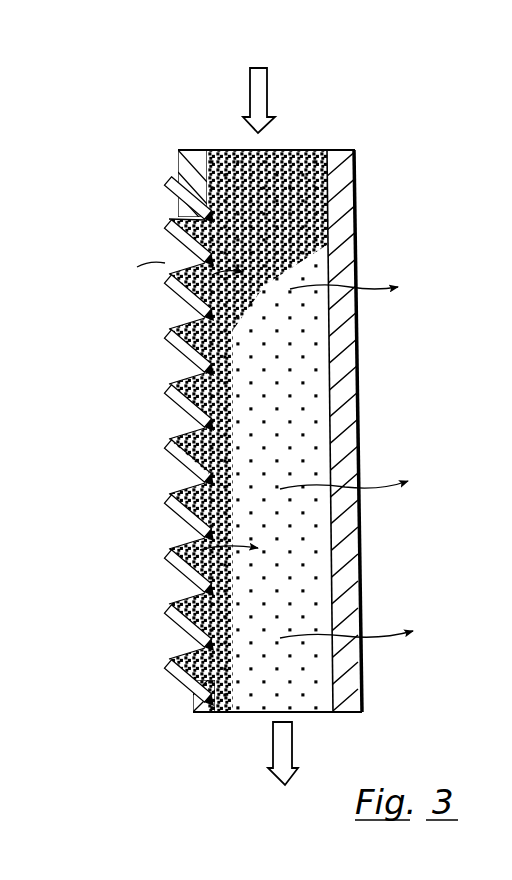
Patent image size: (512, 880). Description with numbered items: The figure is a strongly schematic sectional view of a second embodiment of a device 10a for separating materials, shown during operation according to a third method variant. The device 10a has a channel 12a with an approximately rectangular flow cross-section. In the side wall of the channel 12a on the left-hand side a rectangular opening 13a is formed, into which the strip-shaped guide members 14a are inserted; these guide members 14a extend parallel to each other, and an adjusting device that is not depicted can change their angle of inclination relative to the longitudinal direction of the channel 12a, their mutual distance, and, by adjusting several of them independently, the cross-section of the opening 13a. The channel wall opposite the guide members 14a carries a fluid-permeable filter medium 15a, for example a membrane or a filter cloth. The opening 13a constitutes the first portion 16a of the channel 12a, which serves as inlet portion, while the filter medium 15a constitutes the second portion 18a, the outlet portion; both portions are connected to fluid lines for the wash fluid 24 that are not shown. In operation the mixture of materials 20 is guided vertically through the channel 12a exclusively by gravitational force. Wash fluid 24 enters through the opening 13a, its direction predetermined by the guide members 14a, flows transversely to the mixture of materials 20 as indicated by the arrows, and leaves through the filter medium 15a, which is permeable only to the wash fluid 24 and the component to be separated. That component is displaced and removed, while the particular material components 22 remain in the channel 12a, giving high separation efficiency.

The device for separating materials 10a is at (395, 115).
The channel 12a is at (310, 244).
The rectangular opening 13a is at (170, 210).
The strip-shaped guide members 14a is at (165, 340).
The fluid-permeable filter medium 15a is at (356, 383).
The first portion 16a is at (155, 427).
The second portion 18a is at (370, 452).
The mixture of materials 20 is at (298, 150).
The particular material components 22 is at (308, 357).
The wash fluid 24 is at (175, 527).